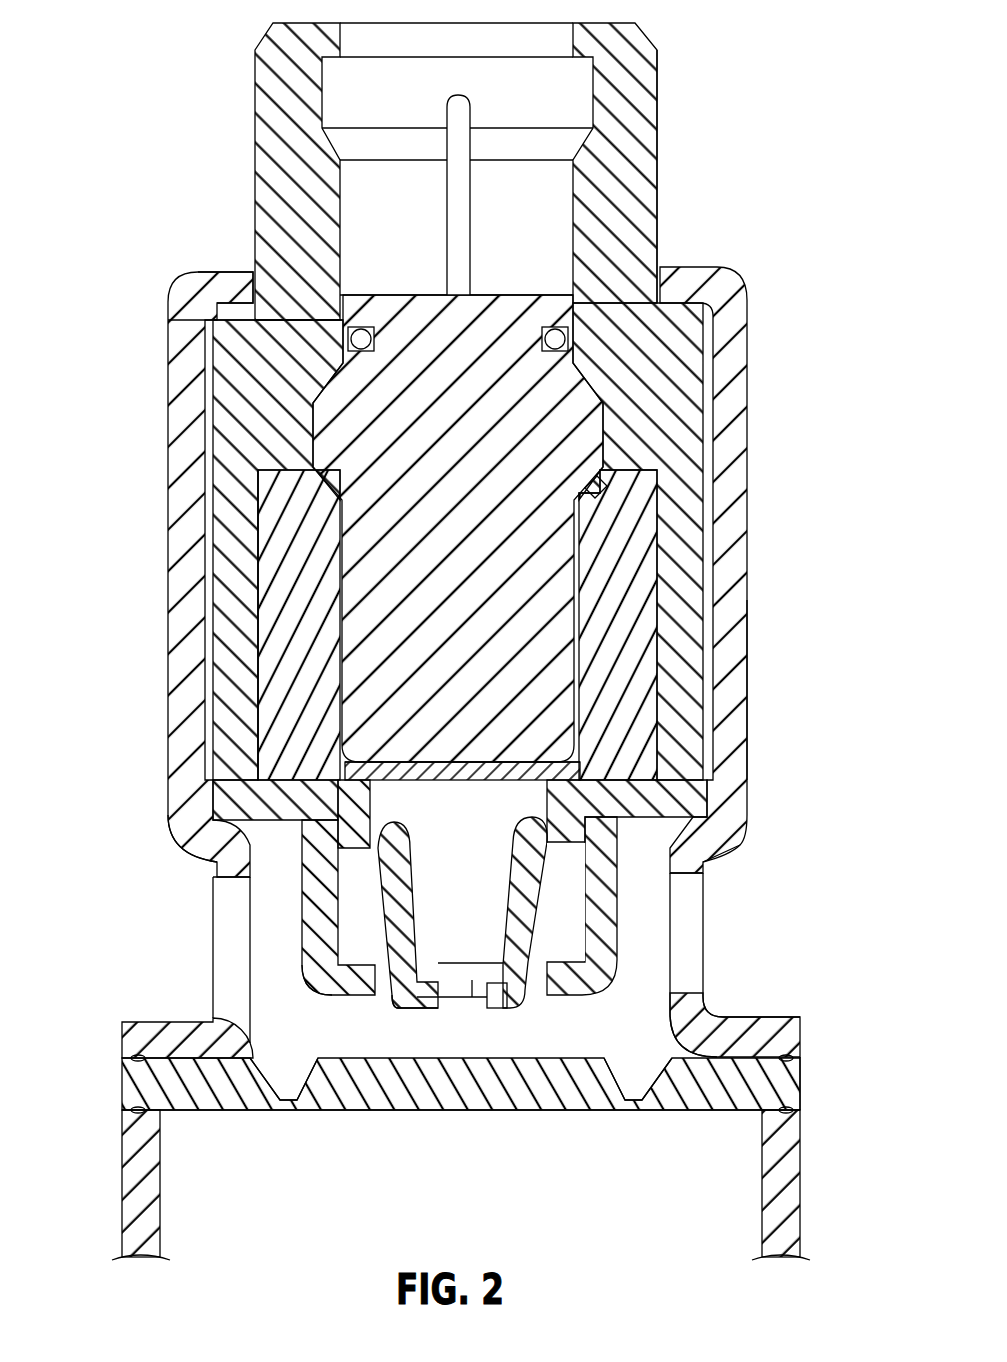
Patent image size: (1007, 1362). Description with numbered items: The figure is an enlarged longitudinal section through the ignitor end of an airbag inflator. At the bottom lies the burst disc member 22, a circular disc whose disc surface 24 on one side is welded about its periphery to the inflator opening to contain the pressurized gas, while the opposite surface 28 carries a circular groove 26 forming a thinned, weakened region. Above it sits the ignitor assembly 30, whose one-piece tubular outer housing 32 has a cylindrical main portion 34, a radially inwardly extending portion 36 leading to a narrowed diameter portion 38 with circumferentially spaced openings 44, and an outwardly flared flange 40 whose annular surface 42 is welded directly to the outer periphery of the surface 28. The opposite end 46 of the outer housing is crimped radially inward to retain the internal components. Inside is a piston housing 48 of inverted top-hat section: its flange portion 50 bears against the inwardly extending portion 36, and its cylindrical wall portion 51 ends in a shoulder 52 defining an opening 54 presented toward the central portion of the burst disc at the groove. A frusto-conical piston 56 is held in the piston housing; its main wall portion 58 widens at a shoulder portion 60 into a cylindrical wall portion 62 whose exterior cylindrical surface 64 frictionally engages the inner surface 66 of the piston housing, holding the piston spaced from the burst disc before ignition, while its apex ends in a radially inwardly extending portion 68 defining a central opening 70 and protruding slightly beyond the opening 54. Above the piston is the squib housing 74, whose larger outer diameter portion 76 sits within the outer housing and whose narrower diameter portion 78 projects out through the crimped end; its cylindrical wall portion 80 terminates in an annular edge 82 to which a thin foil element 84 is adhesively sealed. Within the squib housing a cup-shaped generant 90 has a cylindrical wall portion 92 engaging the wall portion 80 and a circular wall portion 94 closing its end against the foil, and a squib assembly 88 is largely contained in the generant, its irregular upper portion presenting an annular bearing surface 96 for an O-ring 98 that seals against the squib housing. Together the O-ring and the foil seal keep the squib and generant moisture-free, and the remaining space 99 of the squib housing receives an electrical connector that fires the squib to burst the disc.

The burst disc member 22 is at (545, 1112).
The circular disc surface 24 is at (404, 1112).
The circular groove 26 is at (638, 1080).
The surface 28 is at (362, 1076).
The ignitor assembly 30 is at (747, 280).
The outer housing 32 is at (723, 580).
The cylindrical main portion 34 is at (723, 692).
The radially inwardly extending portion 36 is at (724, 844).
The narrowed diameter portion 38 is at (700, 871).
The outwardly flared flange 40 is at (796, 1024).
The annular surface 42 is at (797, 1075).
The openings 44 is at (242, 955).
The end 46 is at (234, 287).
The piston housing 48 is at (206, 854).
The flange portion 50 is at (228, 797).
The cylindrical wall portion 51 is at (320, 925).
The shoulder 52 is at (352, 988).
The opening 54 is at (395, 1000).
The piston 56 is at (520, 950).
The frusto-conical main wall portion 58 is at (395, 922).
The shoulder portion 60 is at (356, 906).
The cylindrical wall portion 62 is at (353, 800).
The exterior cylindrical surface 64 is at (602, 681).
The inner surface 66 is at (588, 900).
The radially inwardly extending portion 68 is at (497, 996).
The central opening 70 is at (470, 982).
The squib housing 74 is at (665, 84).
The larger outer diameter portion 76 is at (683, 387).
The narrower diameter portion 78 is at (636, 154).
The cylindrical wall portion 80 is at (688, 528).
The annular edge 82 is at (722, 788).
The foil element 84 is at (482, 782).
The squib assembly 88 is at (362, 597).
The generant 90 is at (280, 695).
The cylindrical wall portion 92 is at (295, 542).
The circular wall portion 94 is at (447, 778).
The annular bearing surface 96 is at (540, 345).
The O-ring 98 is at (350, 338).
The remaining space 99 is at (367, 200).